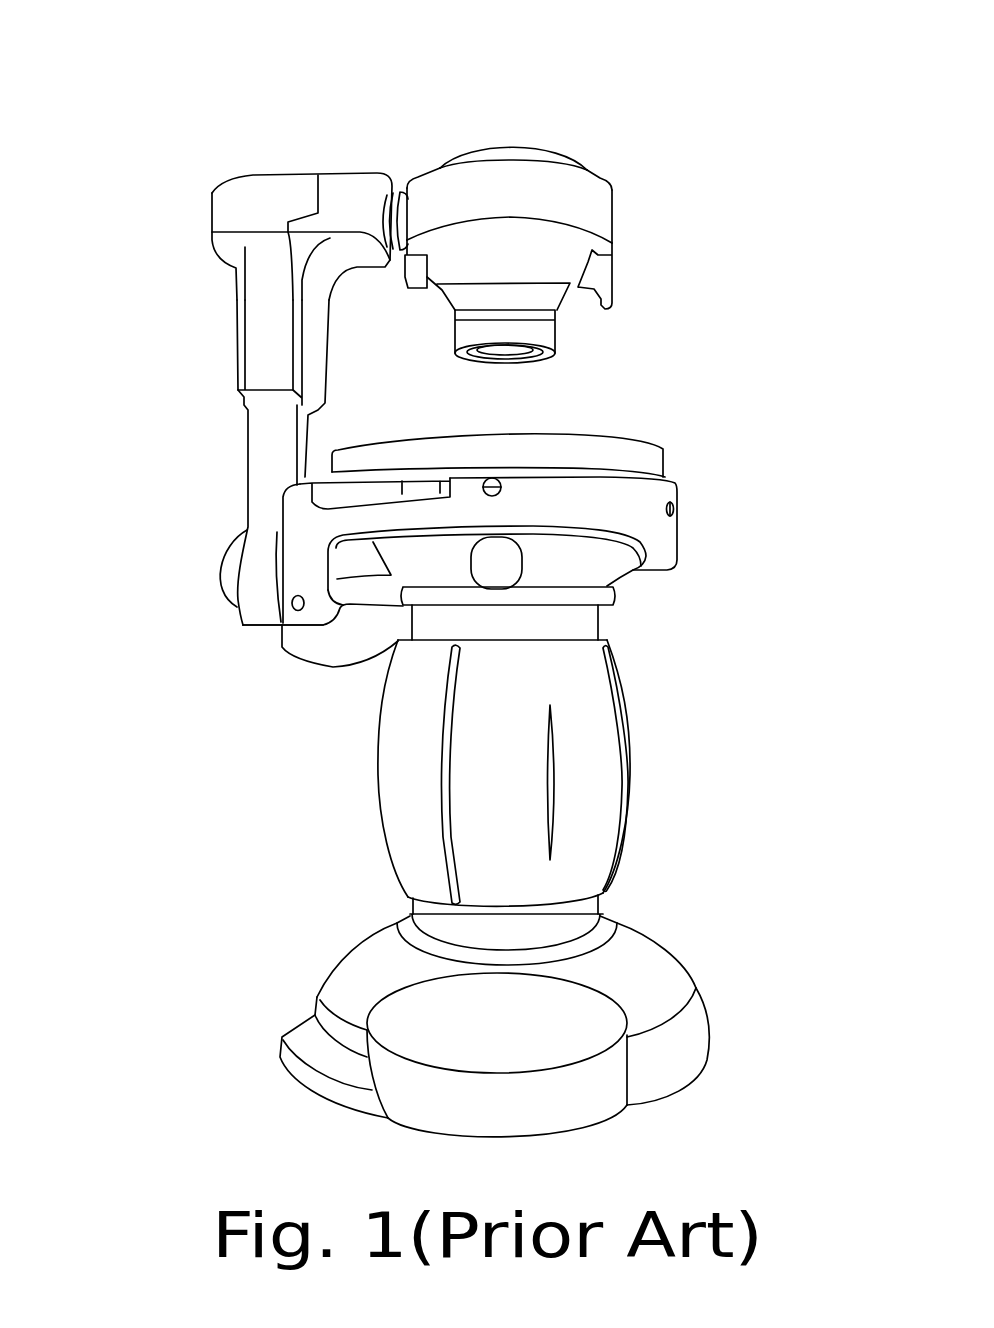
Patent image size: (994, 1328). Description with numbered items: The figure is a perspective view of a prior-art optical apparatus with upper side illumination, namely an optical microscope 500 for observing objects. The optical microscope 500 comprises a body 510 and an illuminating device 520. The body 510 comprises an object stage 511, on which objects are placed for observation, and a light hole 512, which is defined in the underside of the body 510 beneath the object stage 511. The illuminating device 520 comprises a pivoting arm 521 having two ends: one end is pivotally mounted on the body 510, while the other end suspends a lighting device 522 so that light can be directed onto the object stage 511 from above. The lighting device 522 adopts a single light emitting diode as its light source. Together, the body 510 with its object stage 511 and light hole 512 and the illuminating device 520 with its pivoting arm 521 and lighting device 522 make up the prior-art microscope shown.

The optical microscope 500 is at (106, 204).
The body 510 is at (408, 828).
The object stage 511 is at (603, 452).
The light hole 512 is at (510, 567).
The illuminating device 520 is at (358, 184).
The pivoting arm 521 is at (277, 313).
The lighting device 522 is at (603, 218).